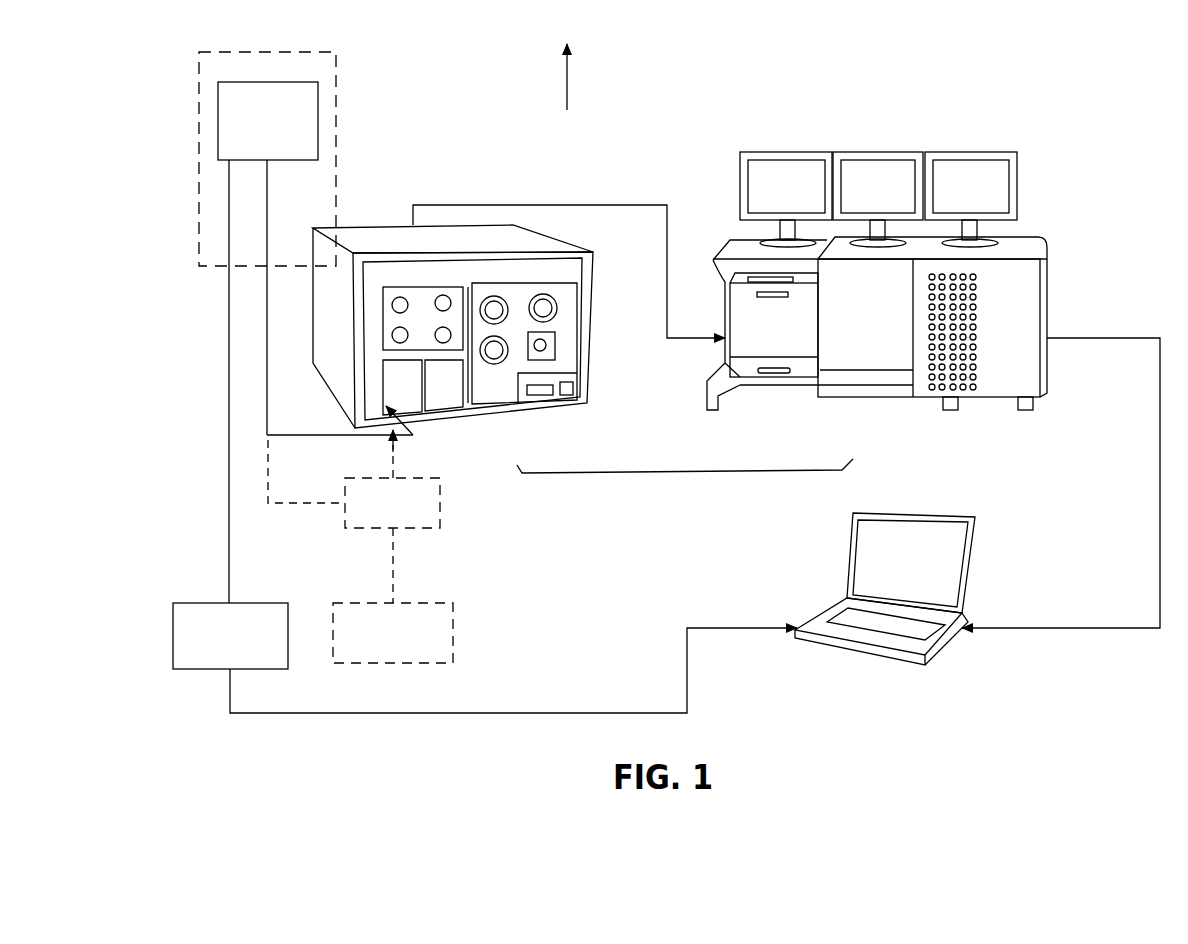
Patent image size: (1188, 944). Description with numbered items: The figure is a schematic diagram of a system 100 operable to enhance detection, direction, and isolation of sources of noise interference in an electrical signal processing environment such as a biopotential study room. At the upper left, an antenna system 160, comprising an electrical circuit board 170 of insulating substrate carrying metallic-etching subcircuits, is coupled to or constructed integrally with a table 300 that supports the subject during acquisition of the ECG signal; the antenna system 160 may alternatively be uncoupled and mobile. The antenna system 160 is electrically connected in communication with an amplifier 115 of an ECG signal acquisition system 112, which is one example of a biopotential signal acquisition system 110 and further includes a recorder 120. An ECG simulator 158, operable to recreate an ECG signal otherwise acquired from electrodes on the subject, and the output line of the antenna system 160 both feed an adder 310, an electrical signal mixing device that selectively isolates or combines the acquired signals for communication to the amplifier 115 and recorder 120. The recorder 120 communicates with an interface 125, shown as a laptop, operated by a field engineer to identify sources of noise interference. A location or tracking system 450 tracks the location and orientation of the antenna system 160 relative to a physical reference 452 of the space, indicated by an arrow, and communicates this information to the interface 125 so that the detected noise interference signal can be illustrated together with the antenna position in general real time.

The system 100 is at (368, 90).
The biopotential signal acquisition system 110 is at (877, 262).
The electrocardiogram (ECG) signal acquisition system 112 is at (692, 475).
The amplifier 115 is at (495, 427).
The recorder 120 is at (862, 404).
The interface 125 is at (989, 517).
The ECG simulator 158 is at (453, 633).
The antenna system 160 is at (320, 147).
The electrical circuit board 170 is at (218, 120).
The table 300 is at (303, 52).
The adder 310 is at (345, 525).
The location or tracking system 450 is at (173, 638).
The physical reference 452 is at (567, 82).